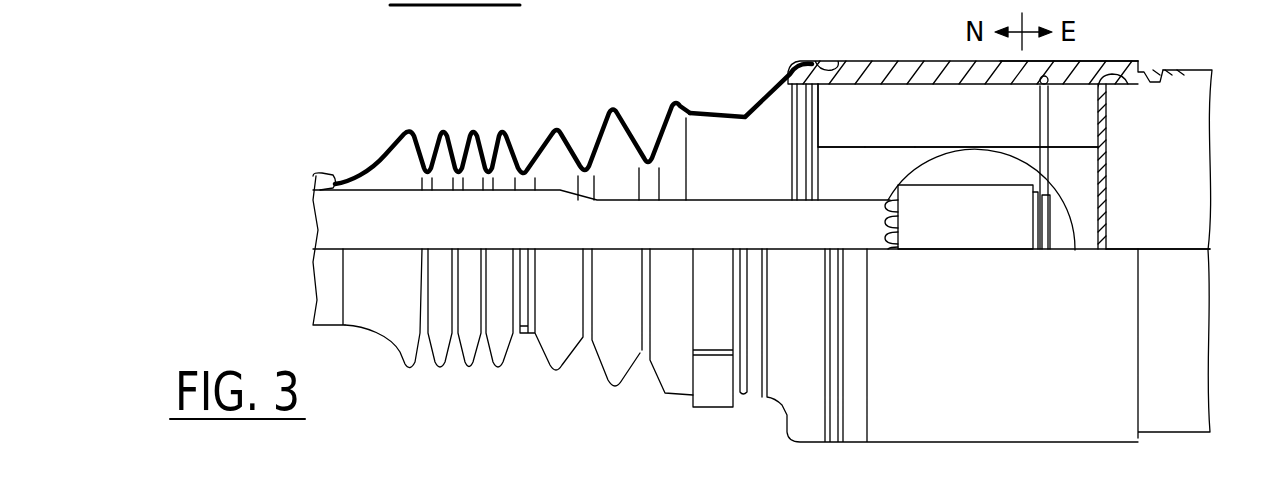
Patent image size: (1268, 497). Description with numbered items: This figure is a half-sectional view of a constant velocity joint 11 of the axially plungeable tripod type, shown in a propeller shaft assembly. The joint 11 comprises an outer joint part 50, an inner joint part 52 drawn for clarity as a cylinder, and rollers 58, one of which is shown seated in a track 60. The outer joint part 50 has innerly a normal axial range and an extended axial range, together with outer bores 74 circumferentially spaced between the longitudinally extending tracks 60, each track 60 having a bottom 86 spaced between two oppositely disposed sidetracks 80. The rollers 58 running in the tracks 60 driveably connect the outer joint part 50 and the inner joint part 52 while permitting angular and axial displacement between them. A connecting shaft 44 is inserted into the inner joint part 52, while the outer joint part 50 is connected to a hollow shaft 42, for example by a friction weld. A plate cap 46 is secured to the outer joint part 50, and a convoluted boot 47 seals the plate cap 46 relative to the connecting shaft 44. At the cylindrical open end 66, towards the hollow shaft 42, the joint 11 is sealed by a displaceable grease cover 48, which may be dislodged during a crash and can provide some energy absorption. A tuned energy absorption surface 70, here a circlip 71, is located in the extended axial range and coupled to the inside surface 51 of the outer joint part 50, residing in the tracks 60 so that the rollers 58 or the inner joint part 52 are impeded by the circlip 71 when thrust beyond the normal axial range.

The constant velocity joint 11 is at (668, 446).
The hollow shaft 42 is at (1188, 68).
The connecting shaft 44 is at (375, 210).
The plate cap 46 is at (772, 100).
The convoluted boot 47 is at (596, 130).
The grease cover 48 is at (1105, 192).
The outer joint part 50 is at (875, 68).
The inside surface 51 is at (1082, 62).
The inner joint part 52 is at (970, 233).
The roller 58 is at (980, 150).
The track 60 is at (840, 147).
The cylindrical open end 66 is at (1110, 63).
The tuned energy absorption surface 70 is at (1118, 134).
The circlip 71 is at (1043, 125).
The outer bore 74 is at (928, 102).
The sidetrack 80 is at (920, 147).
The bottom 86 is at (888, 147).